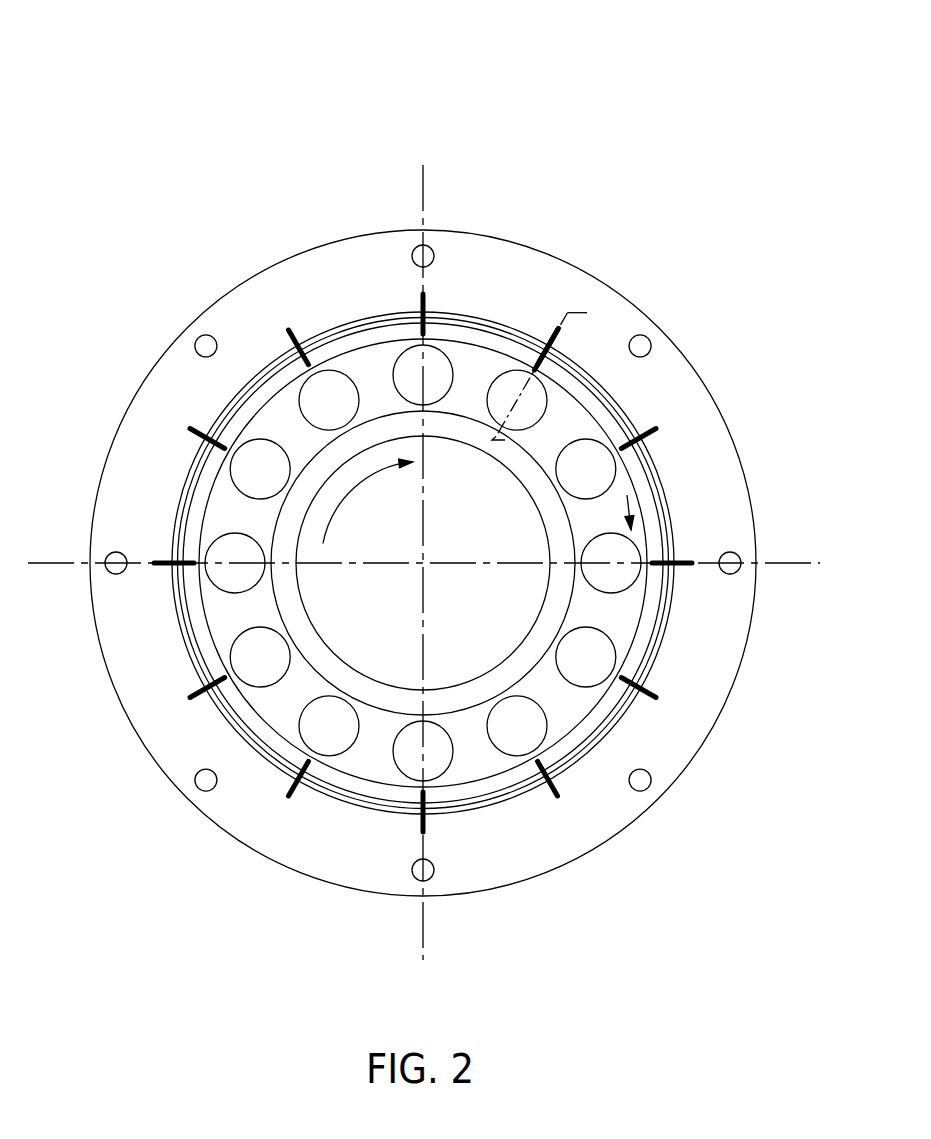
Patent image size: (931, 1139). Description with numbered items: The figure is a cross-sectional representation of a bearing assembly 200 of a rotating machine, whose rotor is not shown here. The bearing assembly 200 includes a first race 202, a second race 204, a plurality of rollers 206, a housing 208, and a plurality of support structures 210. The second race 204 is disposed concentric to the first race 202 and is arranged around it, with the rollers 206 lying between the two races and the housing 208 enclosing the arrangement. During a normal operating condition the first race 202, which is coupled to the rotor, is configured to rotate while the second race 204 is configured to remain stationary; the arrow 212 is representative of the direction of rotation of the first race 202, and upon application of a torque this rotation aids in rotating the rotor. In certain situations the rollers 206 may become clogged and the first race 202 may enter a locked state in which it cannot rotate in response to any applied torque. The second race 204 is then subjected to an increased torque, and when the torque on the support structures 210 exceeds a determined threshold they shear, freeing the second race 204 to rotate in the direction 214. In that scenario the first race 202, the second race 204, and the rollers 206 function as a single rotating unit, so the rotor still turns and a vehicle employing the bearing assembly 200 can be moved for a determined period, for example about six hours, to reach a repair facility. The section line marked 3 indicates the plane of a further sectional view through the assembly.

The bearing assembly 200 is at (722, 64).
The first race 202 is at (388, 695).
The second race 204 is at (208, 655).
The rollers 206 is at (338, 372).
The housing 208 is at (557, 258).
The support structures 210 is at (287, 347).
The direction of rotation 212 is at (345, 497).
The direction 214 is at (627, 495).
The section line 3- 3 is at (572, 316).